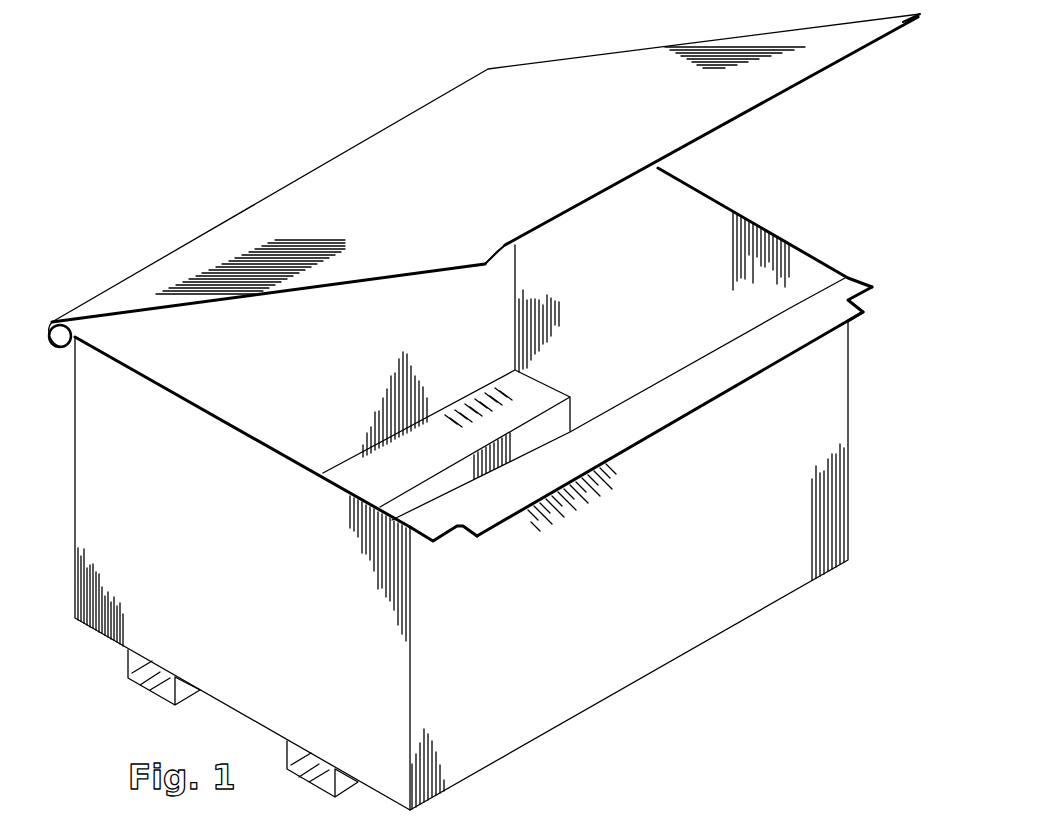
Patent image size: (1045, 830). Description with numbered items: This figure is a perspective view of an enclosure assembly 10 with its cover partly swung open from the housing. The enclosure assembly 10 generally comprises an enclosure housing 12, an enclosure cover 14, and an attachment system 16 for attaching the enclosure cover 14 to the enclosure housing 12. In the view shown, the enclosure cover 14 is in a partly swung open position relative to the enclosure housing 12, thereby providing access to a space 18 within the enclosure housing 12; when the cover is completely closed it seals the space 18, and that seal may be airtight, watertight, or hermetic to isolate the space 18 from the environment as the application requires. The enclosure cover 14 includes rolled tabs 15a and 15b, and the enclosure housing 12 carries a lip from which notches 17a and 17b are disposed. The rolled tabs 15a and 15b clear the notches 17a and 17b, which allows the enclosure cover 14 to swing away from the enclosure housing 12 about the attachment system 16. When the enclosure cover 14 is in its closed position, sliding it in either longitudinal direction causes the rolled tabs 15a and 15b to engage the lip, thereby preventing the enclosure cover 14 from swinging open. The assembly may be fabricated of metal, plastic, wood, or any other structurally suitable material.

The enclosure assembly 10 is at (220, 188).
The enclosure housing 12 is at (653, 628).
The enclosure cover 14 is at (705, 133).
The rolled tab 15a is at (487, 270).
The rolled tab 15b is at (900, 25).
The attachment system 16 is at (52, 348).
The notch 17a is at (458, 540).
The notch 17b is at (868, 318).
The space 18 is at (795, 277).